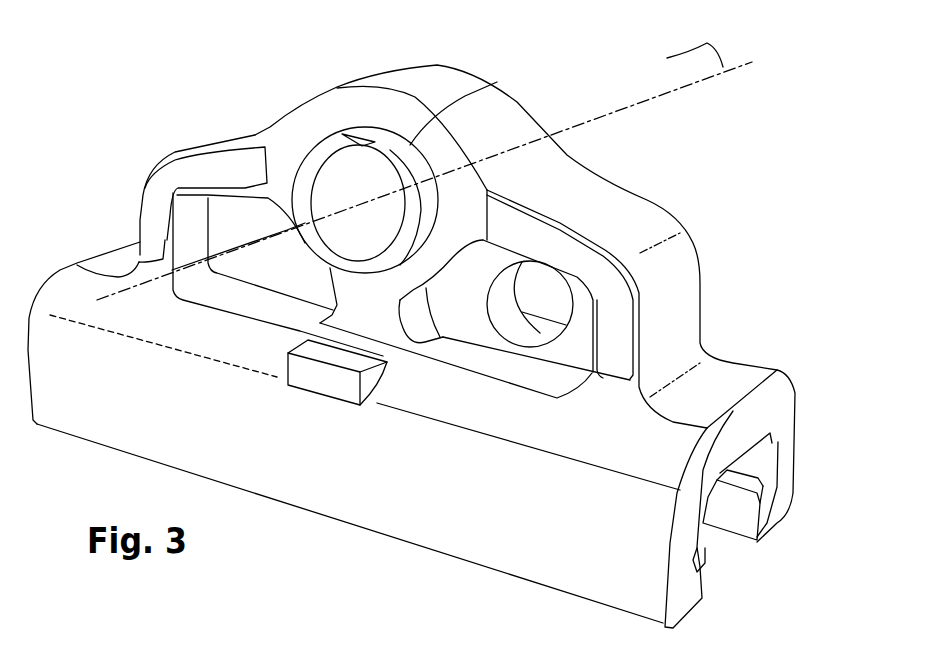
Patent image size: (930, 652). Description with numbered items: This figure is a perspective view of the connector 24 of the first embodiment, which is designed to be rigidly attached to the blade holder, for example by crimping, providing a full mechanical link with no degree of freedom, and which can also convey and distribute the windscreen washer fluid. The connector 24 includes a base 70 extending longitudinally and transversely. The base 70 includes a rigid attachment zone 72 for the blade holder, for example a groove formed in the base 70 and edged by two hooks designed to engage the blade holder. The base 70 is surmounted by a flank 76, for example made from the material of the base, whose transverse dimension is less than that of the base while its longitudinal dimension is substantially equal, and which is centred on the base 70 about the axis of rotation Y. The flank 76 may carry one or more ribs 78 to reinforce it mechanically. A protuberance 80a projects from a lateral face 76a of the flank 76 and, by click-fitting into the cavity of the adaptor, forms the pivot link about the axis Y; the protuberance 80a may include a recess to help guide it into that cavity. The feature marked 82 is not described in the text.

The connector 24 is at (423, 314).
The base 70 is at (418, 562).
The rigid attachment zone 72 is at (713, 550).
The flank 76 is at (650, 195).
The lateral face 76a is at (298, 142).
The rib 78 is at (377, 307).
The protuberance 80a is at (410, 145).
The notch 82 is at (353, 132).